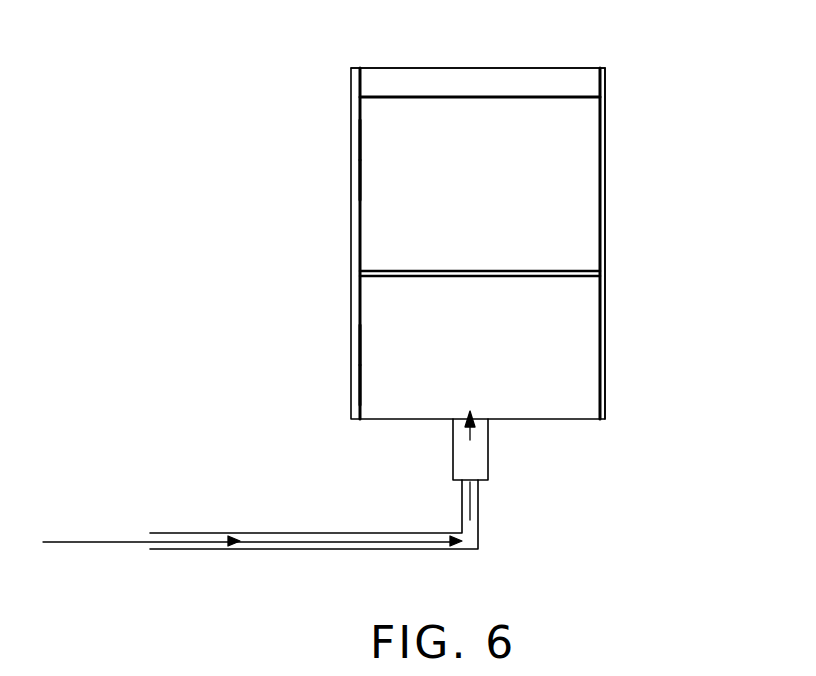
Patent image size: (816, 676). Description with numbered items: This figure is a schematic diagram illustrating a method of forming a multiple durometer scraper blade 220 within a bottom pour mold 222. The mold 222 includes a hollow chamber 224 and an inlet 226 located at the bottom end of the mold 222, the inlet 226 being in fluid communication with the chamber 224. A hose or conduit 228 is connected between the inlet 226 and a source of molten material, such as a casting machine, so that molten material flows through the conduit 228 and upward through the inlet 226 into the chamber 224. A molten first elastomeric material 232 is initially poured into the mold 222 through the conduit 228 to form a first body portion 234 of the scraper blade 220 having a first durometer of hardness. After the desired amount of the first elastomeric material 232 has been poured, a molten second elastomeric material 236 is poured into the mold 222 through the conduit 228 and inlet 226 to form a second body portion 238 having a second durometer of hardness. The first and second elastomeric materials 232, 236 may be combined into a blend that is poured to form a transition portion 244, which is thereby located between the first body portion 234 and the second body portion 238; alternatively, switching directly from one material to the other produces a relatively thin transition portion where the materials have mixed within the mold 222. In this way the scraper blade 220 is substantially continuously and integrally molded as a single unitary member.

The multiple durometer scraper blade 220 is at (572, 250).
The bottom pour mold 222 is at (607, 75).
The hollow chamber 224 is at (531, 80).
The inlet 226 is at (490, 424).
The conduit 228 is at (337, 548).
The first elastomeric material 232 is at (397, 178).
The first body portion 234 is at (397, 135).
The second elastomeric material 236 is at (385, 378).
The second body portion 238 is at (386, 342).
The transition portion 244 is at (473, 276).